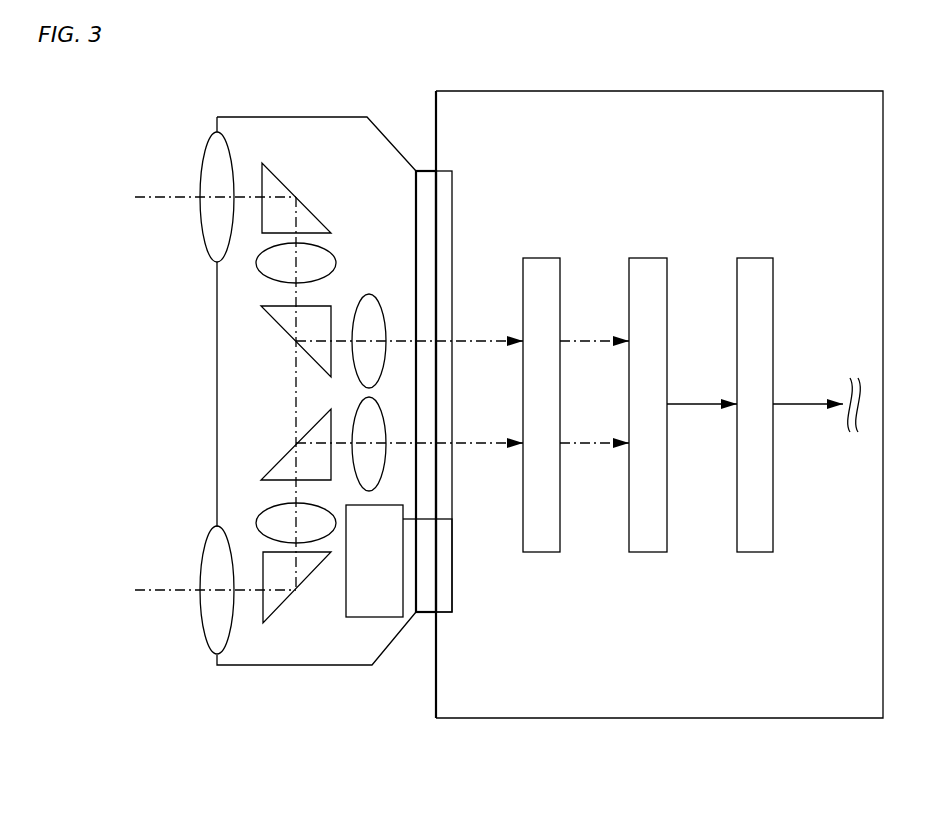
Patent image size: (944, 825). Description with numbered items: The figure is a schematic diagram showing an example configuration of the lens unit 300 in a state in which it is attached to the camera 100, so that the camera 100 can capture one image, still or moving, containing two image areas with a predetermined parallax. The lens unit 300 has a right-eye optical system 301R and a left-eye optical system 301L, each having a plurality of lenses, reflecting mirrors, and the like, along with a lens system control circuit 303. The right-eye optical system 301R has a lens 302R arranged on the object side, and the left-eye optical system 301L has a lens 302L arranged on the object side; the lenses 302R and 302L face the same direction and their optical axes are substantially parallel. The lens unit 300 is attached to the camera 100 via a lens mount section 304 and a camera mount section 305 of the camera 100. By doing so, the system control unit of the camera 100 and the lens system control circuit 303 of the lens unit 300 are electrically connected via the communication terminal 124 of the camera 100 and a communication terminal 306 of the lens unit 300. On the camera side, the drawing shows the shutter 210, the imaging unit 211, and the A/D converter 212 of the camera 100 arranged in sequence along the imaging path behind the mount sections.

The camera 100 is at (711, 91).
The lens unit 300 is at (384, 134).
The right-eye optical system 301R is at (122, 132).
The left-eye optical system 301L is at (122, 398).
The lens 302R is at (206, 150).
The lens 302L is at (208, 650).
The lens system control circuit 303 is at (375, 598).
The lens mount section 304 is at (423, 207).
The camera mount section 305 is at (445, 200).
The communication terminal 306 is at (425, 597).
The communication terminal 124 is at (445, 558).
The shutter 210 is at (543, 258).
The imaging unit 211 is at (648, 258).
The A/D converter 212 is at (757, 258).